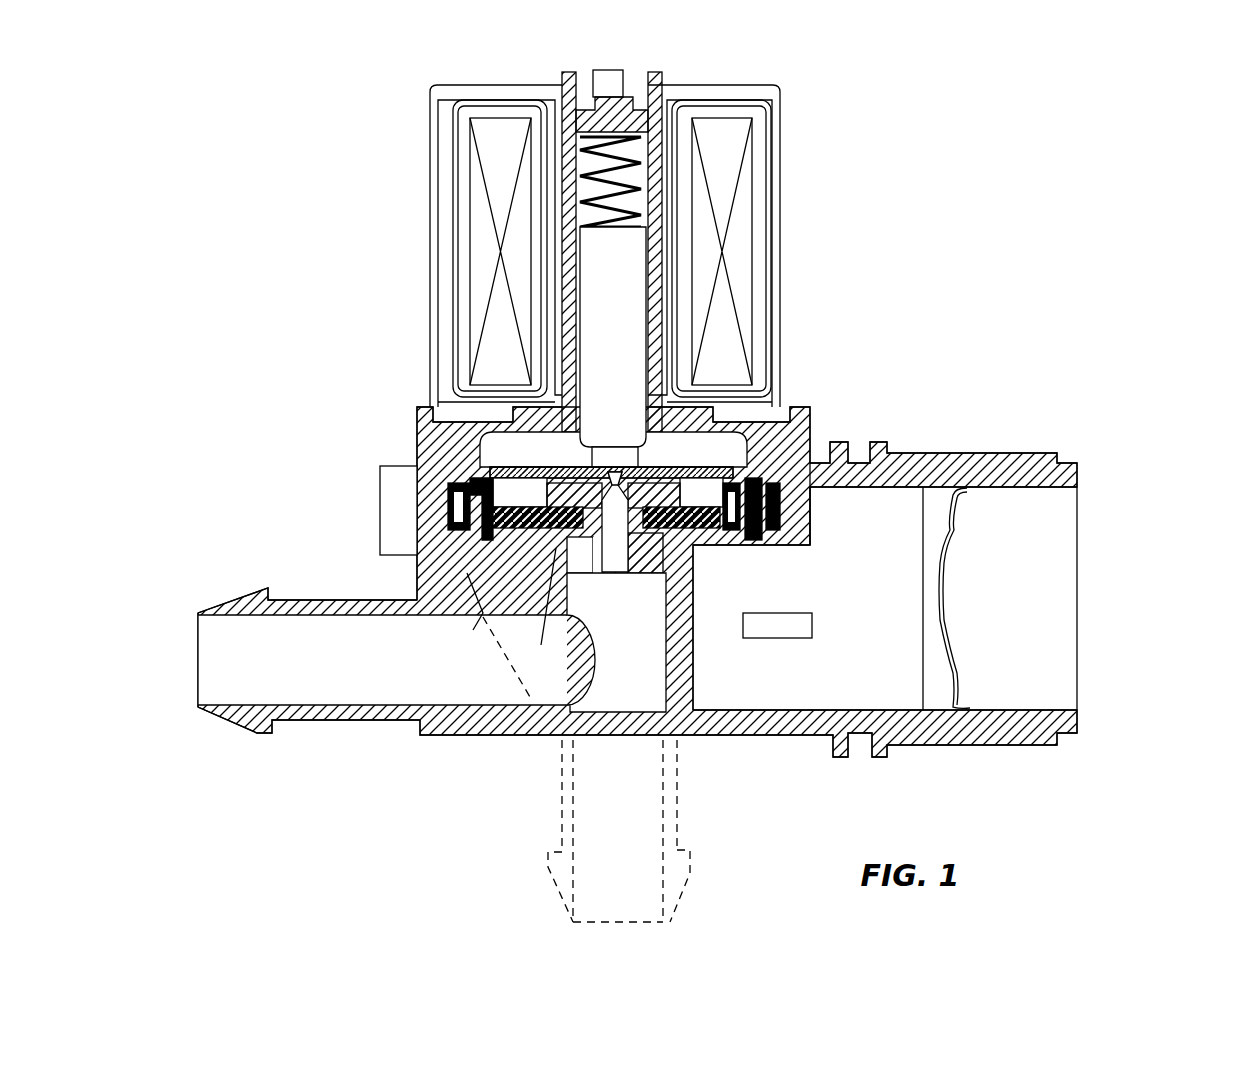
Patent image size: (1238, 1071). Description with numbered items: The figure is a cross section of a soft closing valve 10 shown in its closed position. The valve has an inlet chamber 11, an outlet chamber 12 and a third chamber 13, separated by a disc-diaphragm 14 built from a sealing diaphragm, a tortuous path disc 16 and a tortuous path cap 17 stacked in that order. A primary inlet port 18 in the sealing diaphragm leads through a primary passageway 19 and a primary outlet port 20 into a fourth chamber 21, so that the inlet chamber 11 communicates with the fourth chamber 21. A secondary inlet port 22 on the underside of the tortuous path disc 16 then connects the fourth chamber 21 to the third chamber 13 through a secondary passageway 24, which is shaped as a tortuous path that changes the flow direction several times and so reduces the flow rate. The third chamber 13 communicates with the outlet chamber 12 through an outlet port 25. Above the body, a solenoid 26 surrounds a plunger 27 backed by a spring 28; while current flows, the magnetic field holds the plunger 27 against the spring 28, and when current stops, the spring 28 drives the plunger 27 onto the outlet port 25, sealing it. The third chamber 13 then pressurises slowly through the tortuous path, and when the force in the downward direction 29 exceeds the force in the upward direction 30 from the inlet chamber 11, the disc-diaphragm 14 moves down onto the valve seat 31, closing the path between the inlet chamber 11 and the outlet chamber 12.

The soft closing valve 10 is at (693, 496).
The inlet chamber 11 is at (1037, 612).
The outlet chamber 12 is at (305, 672).
The third chamber 13 is at (700, 470).
The disc-diaphragm 14 is at (380, 513).
The tortuous path disc 16 is at (770, 543).
The tortuous path cap 17 is at (642, 447).
The primary inlet port 18 is at (713, 553).
The primary passageway 19 is at (700, 548).
The primary outlet port 20 is at (650, 543).
The fourth chamber 21 is at (489, 587).
The secondary inlet port 22 is at (690, 487).
The secondary passageway 24 is at (722, 478).
The outlet port 25 is at (618, 535).
The solenoid 26 is at (748, 213).
The plunger 27 is at (621, 280).
The spring 28 is at (638, 170).
The downward direction 29 is at (360, 277).
The upward direction 30 is at (299, 276).
The valve seat 31 is at (540, 609).